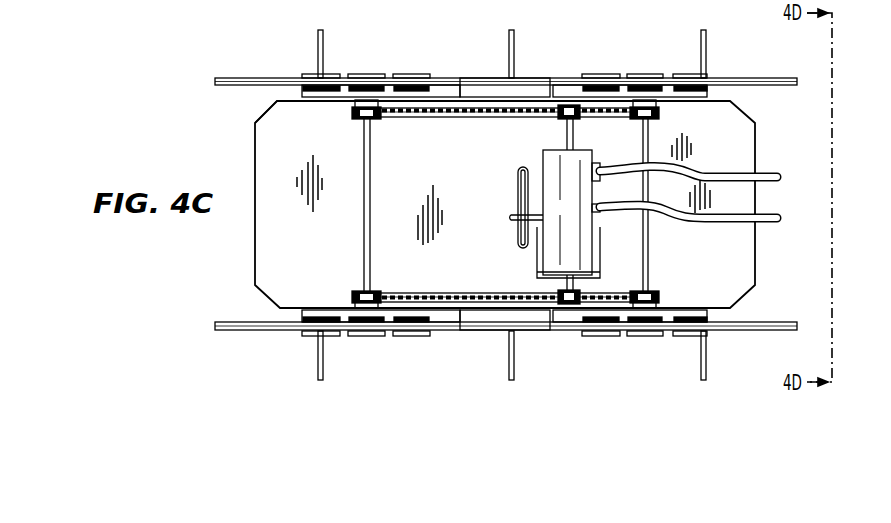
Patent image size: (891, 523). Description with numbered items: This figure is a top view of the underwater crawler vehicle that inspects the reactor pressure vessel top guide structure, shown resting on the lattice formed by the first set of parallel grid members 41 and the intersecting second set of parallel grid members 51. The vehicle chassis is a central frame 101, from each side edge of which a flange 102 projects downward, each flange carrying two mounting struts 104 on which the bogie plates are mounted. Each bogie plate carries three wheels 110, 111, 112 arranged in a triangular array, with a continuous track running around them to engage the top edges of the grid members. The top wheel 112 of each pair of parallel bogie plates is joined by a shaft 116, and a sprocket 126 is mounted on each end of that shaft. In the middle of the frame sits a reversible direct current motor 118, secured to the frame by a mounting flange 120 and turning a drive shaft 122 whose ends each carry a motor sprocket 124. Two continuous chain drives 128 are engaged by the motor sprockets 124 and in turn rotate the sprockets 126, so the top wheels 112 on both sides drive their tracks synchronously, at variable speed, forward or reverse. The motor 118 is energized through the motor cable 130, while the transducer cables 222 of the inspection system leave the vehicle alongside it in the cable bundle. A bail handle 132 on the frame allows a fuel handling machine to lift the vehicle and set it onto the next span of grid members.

The parallel grid members 41 is at (238, 78).
The parallel grid members 51 is at (318, 53).
The central frame 101 is at (757, 150).
The flange 102 is at (451, 80).
The mounting struts 104 is at (283, 97).
The wheel 110 is at (412, 74).
The wheel 111 is at (330, 74).
The top wheel 112 is at (366, 74).
The shaft 116 is at (364, 238).
The reversible direct current motor 118 is at (543, 155).
The mounting flange 120 is at (537, 265).
The drive shaft 122 is at (560, 122).
The motor sprocket 124 is at (560, 290).
The sprocket 126 is at (360, 118).
The continuous chain drive 128 is at (397, 118).
The motor cable 130 is at (779, 180).
The bail handle 132 is at (518, 187).
The transducer cables 222 is at (770, 221).